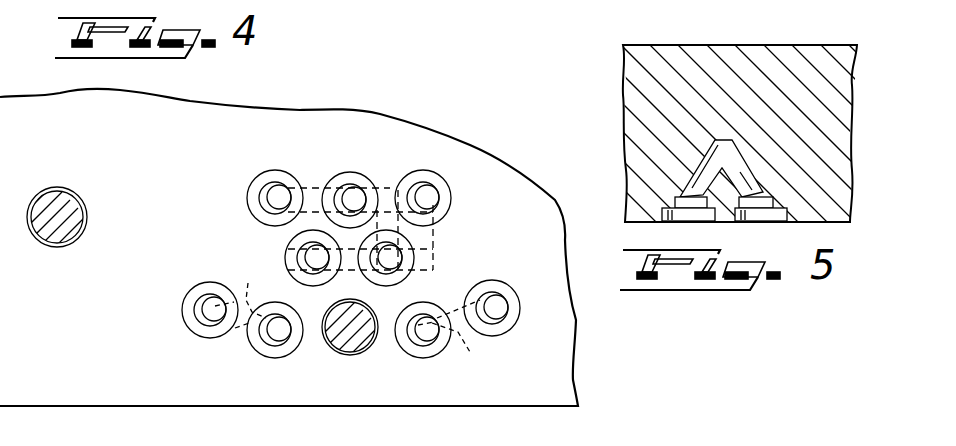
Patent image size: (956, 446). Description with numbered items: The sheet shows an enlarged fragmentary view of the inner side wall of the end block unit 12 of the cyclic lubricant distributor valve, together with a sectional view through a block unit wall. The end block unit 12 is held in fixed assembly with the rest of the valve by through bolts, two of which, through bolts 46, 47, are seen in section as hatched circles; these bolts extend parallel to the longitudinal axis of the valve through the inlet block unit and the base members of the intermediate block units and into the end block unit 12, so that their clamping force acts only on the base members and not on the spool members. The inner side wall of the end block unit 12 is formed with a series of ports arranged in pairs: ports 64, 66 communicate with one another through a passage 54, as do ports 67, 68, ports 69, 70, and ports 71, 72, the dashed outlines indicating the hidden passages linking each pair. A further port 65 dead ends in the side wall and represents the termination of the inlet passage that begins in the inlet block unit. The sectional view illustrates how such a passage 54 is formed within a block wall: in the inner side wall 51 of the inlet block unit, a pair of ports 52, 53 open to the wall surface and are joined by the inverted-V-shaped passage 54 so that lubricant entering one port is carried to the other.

In FIG. 4, the end block unit 12 is at (578, 357).
In FIG. 4, the through bolt 46 is at (53, 240).
In FIG. 4, the through bolt 47 is at (340, 347).
In FIG. 5, the inner side wall 51 is at (834, 222).
In FIG. 5, the port 52 is at (686, 222).
In FIG. 5, the port 53 is at (770, 222).
In FIG. 4, the passage 54 is at (350, 318).
In FIG. 5, the passage 54 is at (706, 158).
In FIG. 4, the port 64 is at (208, 318).
In FIG. 4, the port 65 is at (352, 192).
In FIG. 4, the port 66 is at (270, 338).
In FIG. 4, the port 67 is at (420, 340).
In FIG. 4, the port 68 is at (497, 320).
In FIG. 4, the port 69 is at (268, 190).
In FIG. 4, the port 70 is at (394, 270).
In FIG. 4, the port 71 is at (432, 192).
In FIG. 4, the port 72 is at (303, 256).